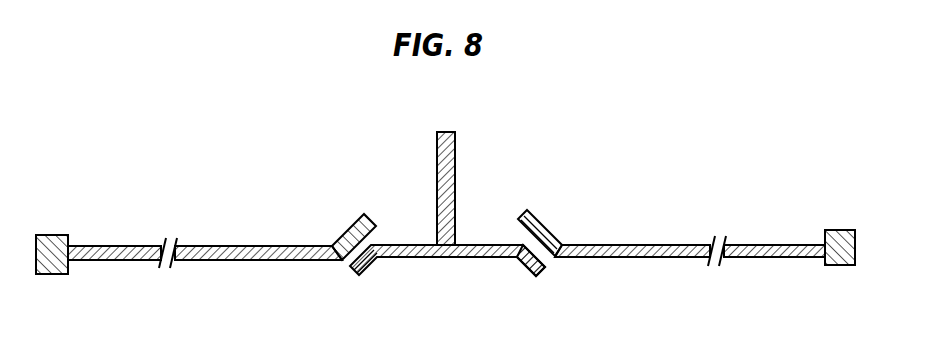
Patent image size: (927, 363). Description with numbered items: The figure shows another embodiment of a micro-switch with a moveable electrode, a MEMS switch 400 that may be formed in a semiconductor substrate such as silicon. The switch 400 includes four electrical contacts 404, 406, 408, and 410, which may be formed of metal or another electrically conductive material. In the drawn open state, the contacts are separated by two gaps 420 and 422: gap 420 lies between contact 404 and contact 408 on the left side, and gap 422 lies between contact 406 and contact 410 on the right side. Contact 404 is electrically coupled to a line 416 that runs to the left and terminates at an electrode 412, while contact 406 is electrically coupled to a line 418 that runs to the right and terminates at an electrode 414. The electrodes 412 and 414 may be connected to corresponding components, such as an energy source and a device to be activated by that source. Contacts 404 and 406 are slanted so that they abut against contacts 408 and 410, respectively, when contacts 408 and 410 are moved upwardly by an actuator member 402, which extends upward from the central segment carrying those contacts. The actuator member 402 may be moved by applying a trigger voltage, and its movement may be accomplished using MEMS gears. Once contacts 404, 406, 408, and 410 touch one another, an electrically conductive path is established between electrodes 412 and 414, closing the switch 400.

The MEMS switch 400 is at (633, 156).
The actuator member 402 is at (437, 145).
The electrical contact 404 is at (346, 232).
The electrical contact 406 is at (547, 230).
The electrical contact 408 is at (366, 272).
The electrical contact 410 is at (526, 273).
The electrode 412 is at (53, 235).
The electrode 414 is at (845, 230).
The line 416 is at (236, 246).
The line 418 is at (655, 245).
The gap 420 is at (336, 268).
The gap 422 is at (557, 268).